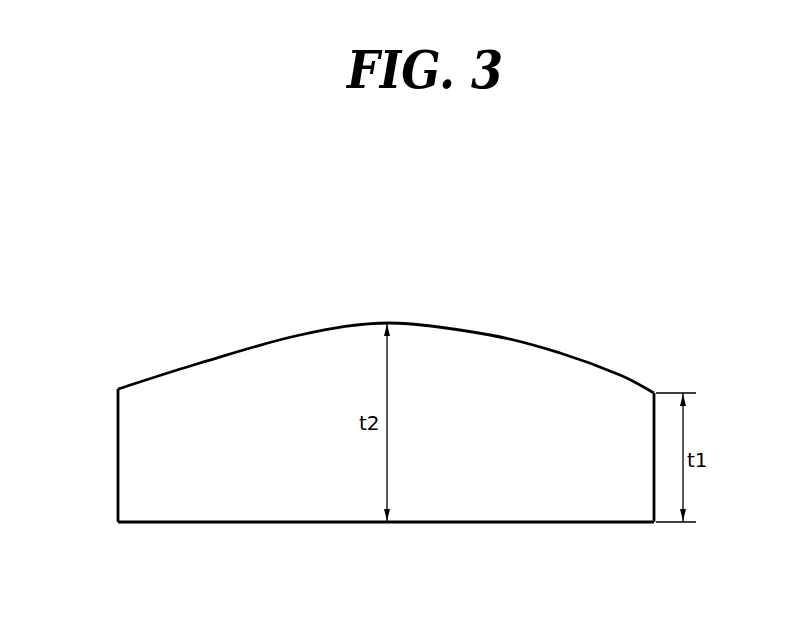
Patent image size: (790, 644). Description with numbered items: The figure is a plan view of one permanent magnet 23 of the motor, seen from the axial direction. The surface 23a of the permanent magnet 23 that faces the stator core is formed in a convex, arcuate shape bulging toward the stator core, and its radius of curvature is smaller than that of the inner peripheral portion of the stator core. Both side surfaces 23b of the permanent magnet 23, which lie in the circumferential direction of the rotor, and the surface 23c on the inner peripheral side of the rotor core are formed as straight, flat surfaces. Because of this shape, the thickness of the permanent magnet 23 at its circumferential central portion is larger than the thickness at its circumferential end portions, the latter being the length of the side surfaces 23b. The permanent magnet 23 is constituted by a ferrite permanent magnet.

The permanent magnet 23 is at (362, 416).
The surface 23a is at (425, 325).
The side surfaces 23b is at (117, 447).
The surface 23c is at (438, 523).